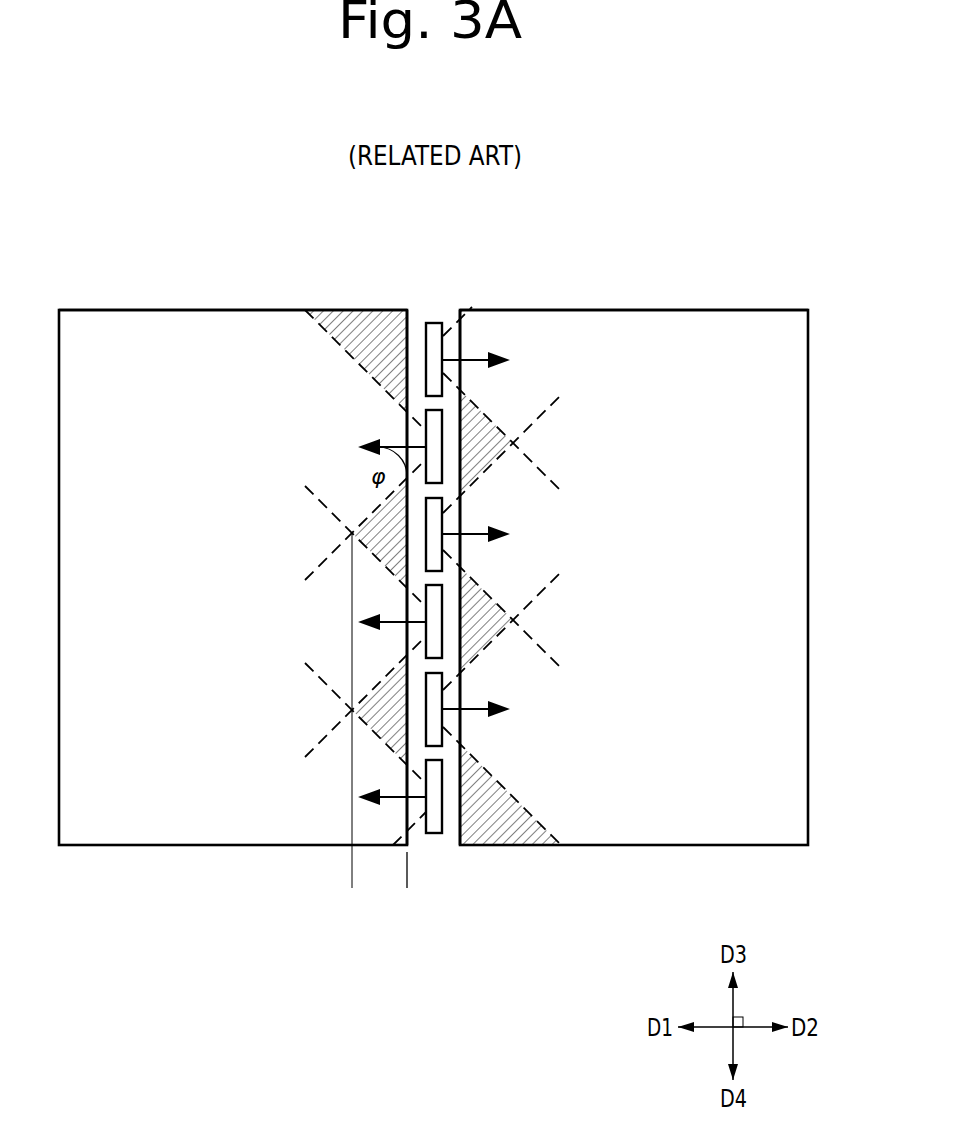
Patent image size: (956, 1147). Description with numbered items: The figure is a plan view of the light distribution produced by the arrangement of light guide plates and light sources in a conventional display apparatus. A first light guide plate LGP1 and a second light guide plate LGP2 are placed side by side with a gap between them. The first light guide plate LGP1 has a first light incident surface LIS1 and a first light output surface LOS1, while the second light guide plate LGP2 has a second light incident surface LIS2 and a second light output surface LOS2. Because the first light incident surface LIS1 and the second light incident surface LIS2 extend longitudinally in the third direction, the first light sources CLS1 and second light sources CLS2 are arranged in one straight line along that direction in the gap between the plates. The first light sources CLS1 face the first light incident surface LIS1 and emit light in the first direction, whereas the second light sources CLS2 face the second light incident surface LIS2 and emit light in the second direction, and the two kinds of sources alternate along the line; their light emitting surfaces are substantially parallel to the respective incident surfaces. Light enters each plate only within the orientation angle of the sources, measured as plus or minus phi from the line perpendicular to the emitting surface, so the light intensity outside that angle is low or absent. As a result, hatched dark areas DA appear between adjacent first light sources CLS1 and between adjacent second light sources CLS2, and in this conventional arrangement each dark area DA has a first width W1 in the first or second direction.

The first light guide plate LGP1 is at (118, 307).
The second light guide plate LGP2 is at (757, 307).
The first light output surface LOS1 is at (227, 325).
The second light output surface LOS2 is at (650, 325).
The first light incident surface LIS1 is at (411, 333).
The second light incident surface LIS2 is at (456, 333).
The dark area DA is at (331, 322).
The first light source CLS1 is at (437, 786).
The second light source CLS2 is at (437, 700).
The first width W1 is at (407, 880).